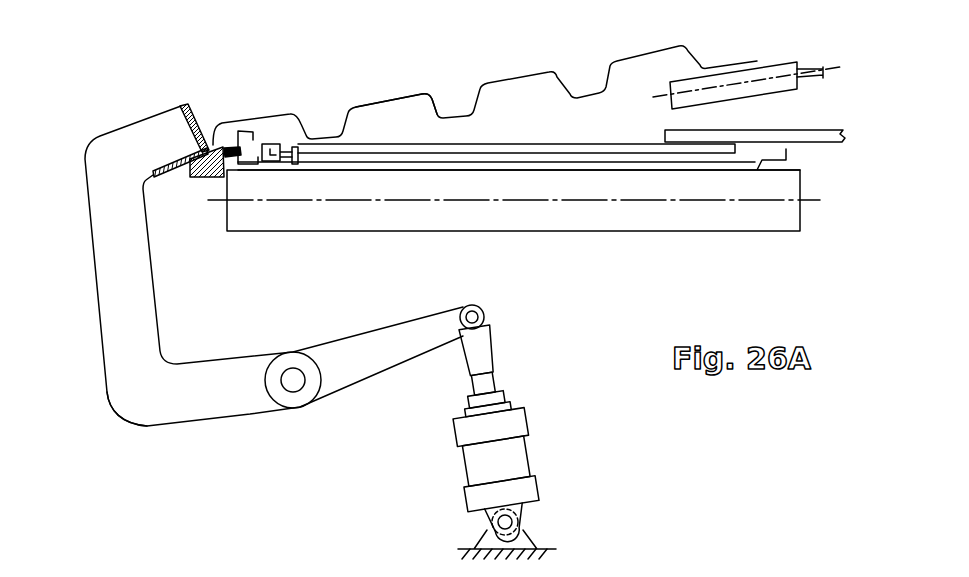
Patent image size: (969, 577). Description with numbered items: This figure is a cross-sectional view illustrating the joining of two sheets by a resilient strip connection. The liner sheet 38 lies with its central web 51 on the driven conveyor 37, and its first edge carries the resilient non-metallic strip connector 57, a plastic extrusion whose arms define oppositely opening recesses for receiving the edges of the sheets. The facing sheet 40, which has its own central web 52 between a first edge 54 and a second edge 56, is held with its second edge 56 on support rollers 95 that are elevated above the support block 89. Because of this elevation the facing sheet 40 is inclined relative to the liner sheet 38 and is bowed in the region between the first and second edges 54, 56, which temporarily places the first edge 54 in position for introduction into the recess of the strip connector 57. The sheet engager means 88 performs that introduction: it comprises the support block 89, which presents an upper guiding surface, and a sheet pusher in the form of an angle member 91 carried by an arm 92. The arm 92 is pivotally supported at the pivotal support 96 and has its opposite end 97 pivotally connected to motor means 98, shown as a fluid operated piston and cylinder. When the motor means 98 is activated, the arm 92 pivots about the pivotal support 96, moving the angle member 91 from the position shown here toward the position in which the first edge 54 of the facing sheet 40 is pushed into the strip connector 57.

The driven conveyor 37 is at (568, 222).
The liner sheet 38 is at (490, 178).
The facing sheet 40 is at (511, 78).
The central web 51 is at (463, 166).
The central web 52 is at (425, 97).
The first edge 54 is at (229, 147).
The second edge 56 is at (758, 63).
The resilient non-metallic strip connector 57 is at (240, 133).
The sheet engager means 88 is at (145, 431).
The support block 89 is at (190, 173).
The angle member 91 is at (195, 105).
The arm 92 is at (105, 190).
The support roller 95 is at (780, 88).
The pivotal support 96 is at (296, 376).
The opposite end 97 is at (484, 318).
The motor means 98 is at (520, 462).